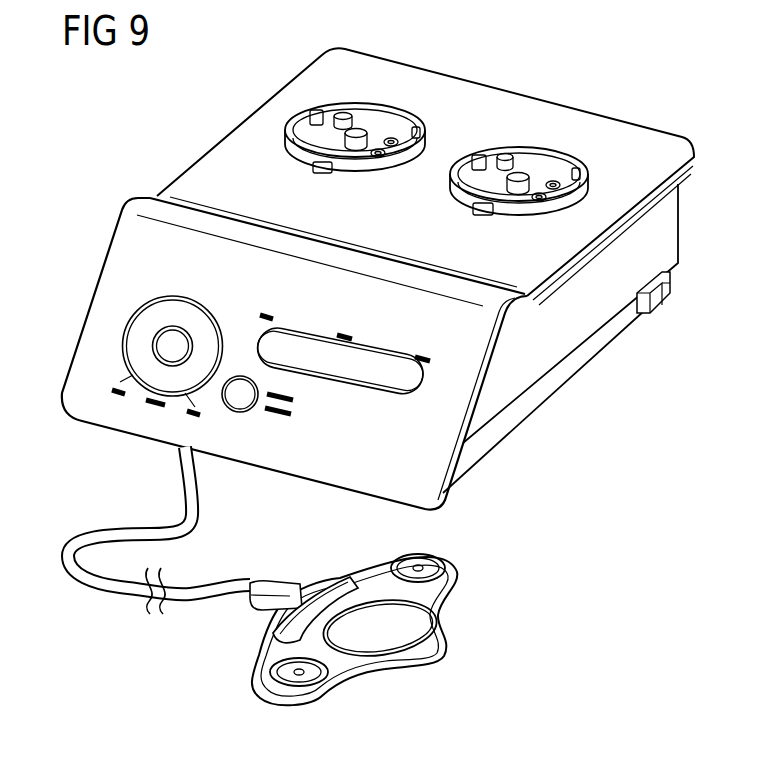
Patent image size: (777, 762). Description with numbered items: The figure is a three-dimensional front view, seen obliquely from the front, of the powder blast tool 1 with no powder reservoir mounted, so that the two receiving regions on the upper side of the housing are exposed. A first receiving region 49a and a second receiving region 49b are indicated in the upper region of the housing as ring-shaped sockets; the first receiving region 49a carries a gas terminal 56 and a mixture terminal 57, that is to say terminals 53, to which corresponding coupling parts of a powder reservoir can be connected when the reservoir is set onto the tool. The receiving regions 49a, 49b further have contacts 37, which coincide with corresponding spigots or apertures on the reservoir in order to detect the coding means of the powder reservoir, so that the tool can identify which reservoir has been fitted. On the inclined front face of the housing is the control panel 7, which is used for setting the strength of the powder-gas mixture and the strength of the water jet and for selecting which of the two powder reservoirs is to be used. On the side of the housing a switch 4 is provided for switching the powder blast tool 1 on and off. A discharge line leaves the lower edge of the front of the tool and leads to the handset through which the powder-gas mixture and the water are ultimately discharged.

The powder blast tool 1 is at (378, 267).
The switch 4 is at (667, 294).
The control panel 7 is at (290, 458).
The contacts 37 is at (563, 194).
The first receiving region 49a is at (535, 138).
The second receiving region 49b is at (359, 94).
The terminals 53 is at (360, 128).
The gas terminal 56 is at (518, 173).
The mixture terminal 57 is at (506, 153).